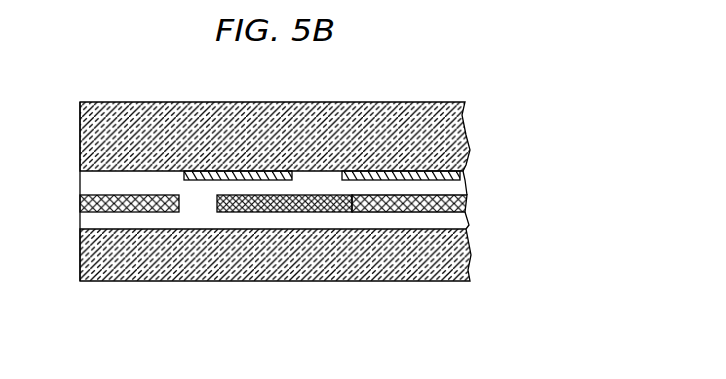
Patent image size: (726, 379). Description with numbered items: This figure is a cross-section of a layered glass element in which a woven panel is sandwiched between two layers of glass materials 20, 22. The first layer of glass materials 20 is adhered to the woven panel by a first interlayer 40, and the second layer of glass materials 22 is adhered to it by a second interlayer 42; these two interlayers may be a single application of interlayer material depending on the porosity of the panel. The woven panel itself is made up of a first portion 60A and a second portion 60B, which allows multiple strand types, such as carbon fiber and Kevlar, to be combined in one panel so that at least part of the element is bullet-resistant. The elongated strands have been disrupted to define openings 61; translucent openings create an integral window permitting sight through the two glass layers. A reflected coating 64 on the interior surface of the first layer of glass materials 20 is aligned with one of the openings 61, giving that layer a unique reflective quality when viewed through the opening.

The first layer of glass materials 20 is at (185, 102).
The second layer of glass materials 22 is at (185, 282).
The first interlayer 40 is at (458, 189).
The second interlayer 42 is at (468, 219).
The first portion of the woven panel 60A is at (268, 212).
The second portion of the woven panel 60B is at (447, 212).
The openings 61 is at (313, 174).
The reflected coating 64 is at (230, 174).